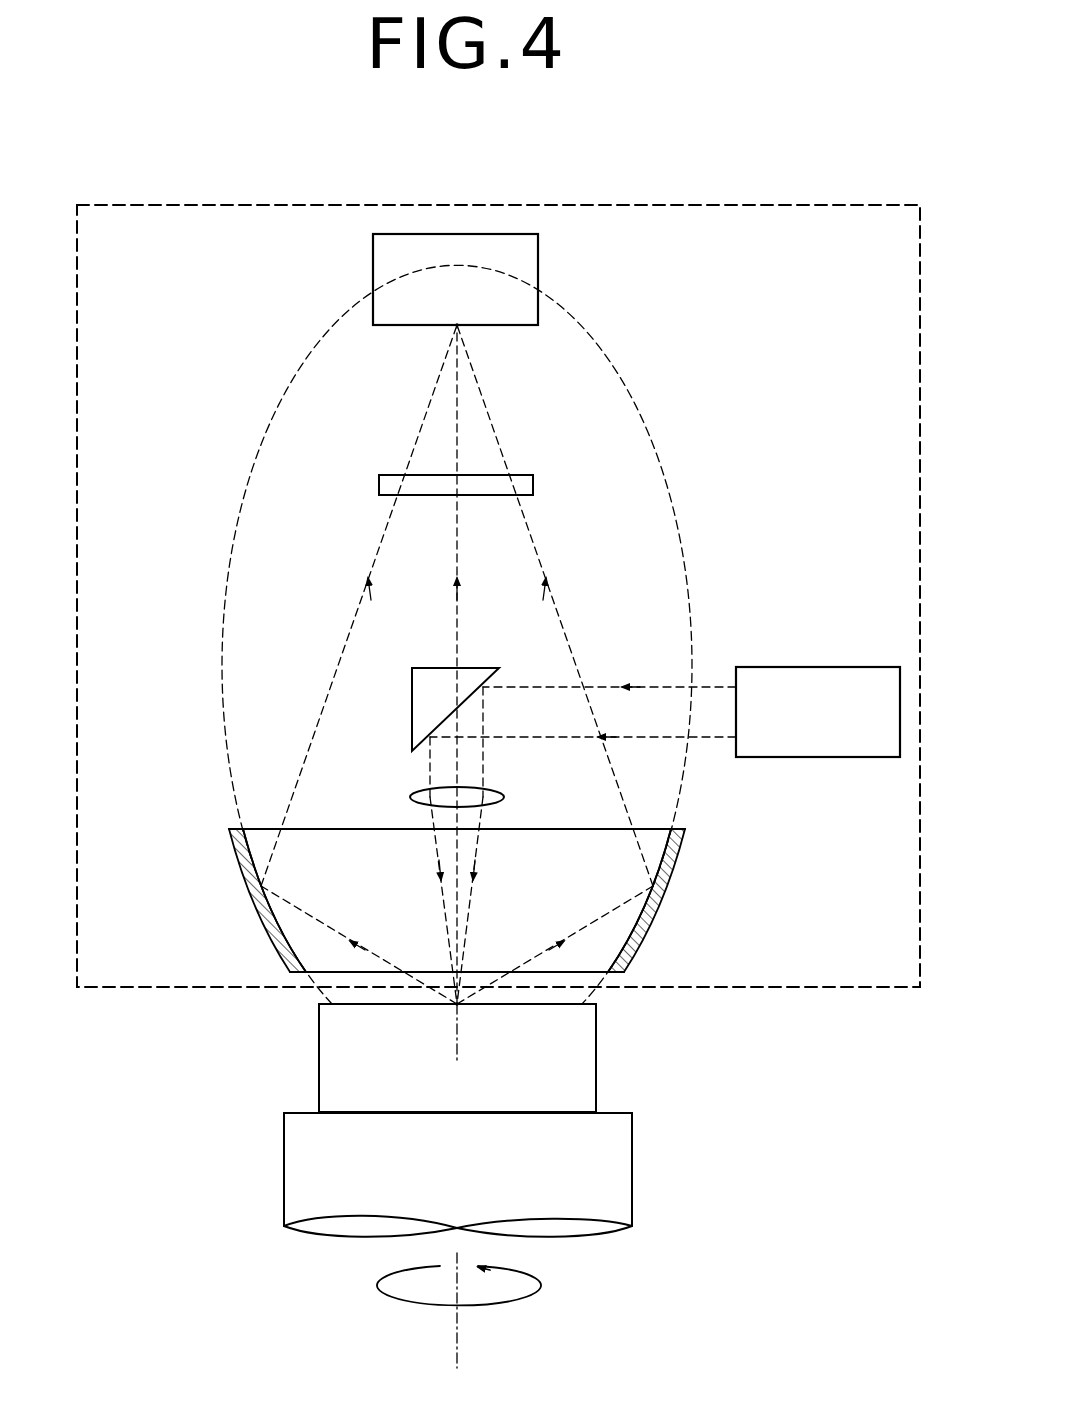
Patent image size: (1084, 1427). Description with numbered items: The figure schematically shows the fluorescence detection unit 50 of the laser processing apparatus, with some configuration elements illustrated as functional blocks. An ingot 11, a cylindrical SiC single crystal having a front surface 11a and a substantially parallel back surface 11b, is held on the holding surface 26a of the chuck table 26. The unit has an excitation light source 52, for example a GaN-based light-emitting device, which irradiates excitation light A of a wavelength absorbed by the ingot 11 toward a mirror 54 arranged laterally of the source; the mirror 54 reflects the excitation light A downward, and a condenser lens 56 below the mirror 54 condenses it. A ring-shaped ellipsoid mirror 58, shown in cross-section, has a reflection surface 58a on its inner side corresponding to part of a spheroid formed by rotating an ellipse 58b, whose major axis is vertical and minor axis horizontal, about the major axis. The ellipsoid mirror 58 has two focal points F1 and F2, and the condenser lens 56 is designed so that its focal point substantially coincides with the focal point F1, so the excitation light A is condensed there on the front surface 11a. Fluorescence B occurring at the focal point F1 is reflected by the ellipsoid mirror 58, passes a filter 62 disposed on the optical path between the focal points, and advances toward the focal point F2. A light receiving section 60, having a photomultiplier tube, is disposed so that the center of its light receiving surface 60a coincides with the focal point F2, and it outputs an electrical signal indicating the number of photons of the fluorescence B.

The fluorescence detection unit 50 is at (455, 205).
The excitation light source 52 is at (810, 666).
The mirror 54 is at (431, 667).
The condenser lens 56 is at (502, 797).
The ellipsoid mirror 58 is at (266, 928).
The reflection surface 58a is at (246, 829).
The ellipse 58b is at (648, 402).
The light receiving section 60 is at (538, 272).
The light receiving surface 60a is at (407, 326).
The filter 62 is at (533, 488).
The ingot 11 is at (596, 1044).
The front surface 11a is at (372, 1005).
The back surface 11b is at (366, 1112).
The chuck table 26 is at (620, 1206).
The holding surface 26a is at (622, 1113).
The focal point F1 is at (458, 1006).
The focal point F2 is at (460, 327).
The excitation light A is at (652, 686).
The fluorescence B is at (364, 581).